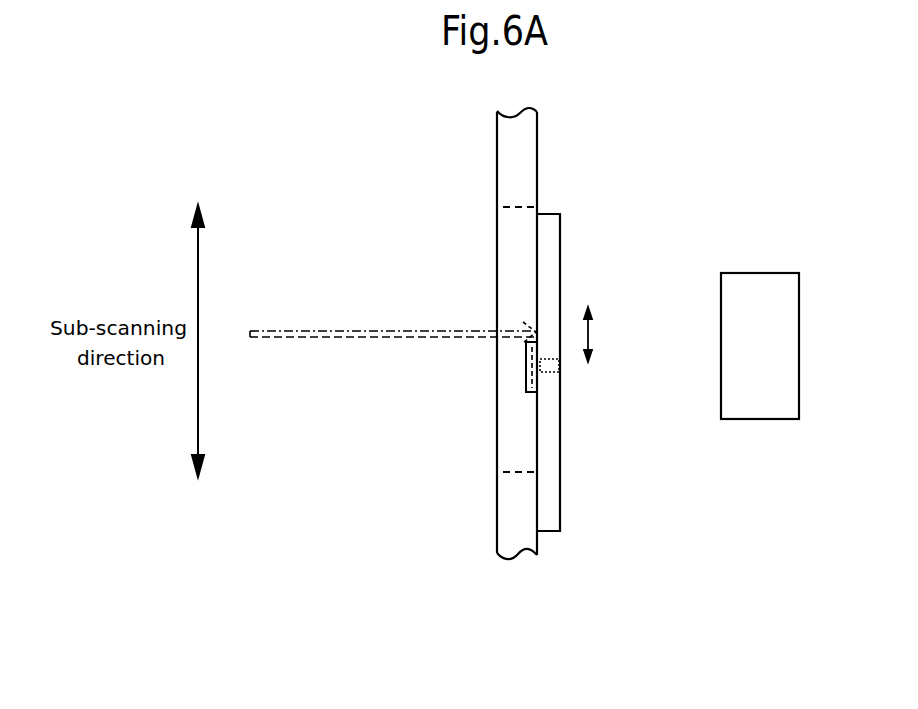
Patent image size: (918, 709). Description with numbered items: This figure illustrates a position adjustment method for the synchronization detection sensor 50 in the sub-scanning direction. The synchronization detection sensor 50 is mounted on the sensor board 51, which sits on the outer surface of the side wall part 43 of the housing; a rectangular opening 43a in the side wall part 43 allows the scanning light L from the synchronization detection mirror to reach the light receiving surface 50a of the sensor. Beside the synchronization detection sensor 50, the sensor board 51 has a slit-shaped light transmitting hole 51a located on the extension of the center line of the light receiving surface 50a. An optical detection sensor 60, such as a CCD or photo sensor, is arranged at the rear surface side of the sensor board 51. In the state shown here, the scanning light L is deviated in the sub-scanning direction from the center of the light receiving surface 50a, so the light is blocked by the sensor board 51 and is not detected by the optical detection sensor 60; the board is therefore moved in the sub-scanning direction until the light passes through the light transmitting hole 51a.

The scanning light L is at (316, 331).
The side wall part 43 is at (537, 140).
The opening 43a is at (525, 210).
The sensor board 51 is at (560, 233).
The light transmitting hole 51a is at (552, 367).
The synchronization detection sensor 50 is at (531, 393).
The light receiving surface 50a is at (526, 357).
The optical detection sensor 60 is at (760, 273).